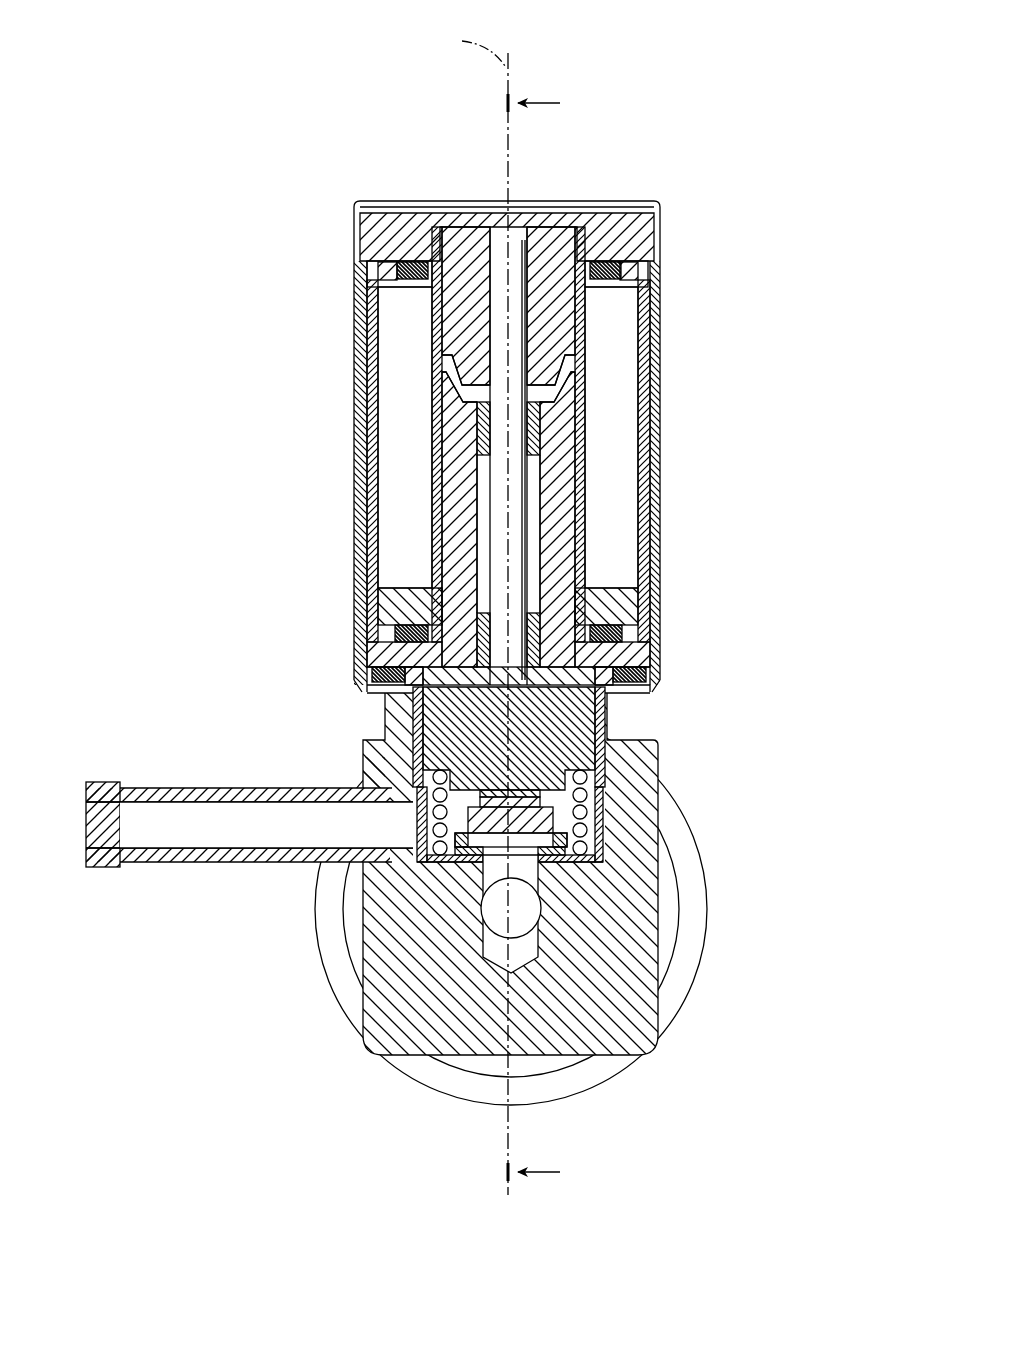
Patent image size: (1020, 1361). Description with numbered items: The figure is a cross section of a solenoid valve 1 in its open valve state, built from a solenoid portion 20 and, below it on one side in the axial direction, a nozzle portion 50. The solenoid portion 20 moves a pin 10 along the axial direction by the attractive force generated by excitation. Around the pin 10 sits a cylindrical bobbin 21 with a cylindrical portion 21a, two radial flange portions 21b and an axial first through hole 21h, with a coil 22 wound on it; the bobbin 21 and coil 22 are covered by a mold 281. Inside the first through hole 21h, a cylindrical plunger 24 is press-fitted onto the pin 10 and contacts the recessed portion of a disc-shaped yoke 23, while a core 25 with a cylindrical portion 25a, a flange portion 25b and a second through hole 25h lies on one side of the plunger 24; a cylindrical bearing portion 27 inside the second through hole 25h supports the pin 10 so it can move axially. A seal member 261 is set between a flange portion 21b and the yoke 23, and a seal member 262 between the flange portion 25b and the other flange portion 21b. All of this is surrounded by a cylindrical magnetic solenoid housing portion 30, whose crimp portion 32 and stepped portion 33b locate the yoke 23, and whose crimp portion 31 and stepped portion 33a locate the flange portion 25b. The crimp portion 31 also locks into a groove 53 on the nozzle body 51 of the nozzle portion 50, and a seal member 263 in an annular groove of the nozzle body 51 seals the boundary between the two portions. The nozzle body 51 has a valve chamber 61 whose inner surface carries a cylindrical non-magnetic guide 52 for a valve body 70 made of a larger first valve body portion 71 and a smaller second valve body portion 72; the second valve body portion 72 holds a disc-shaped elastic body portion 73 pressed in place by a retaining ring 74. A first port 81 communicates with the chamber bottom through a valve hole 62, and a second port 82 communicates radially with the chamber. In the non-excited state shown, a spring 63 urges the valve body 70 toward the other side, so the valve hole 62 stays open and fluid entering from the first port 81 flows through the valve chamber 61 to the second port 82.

The solenoid valve 1 is at (116, 144).
The pin 10 is at (515, 230).
The solenoid portion 20 is at (192, 414).
The bobbin 21 is at (640, 562).
The cylindrical portion 21a is at (585, 495).
The flange portions 21b is at (632, 278).
The first through hole 21h is at (567, 402).
The coil 22 is at (398, 406).
The yoke 23 is at (630, 225).
The plunger 24 is at (551, 228).
The core 25 is at (270, 520).
The cylindrical portion 25a is at (432, 548).
The flange portion 25b is at (435, 608).
The second through hole 25h is at (495, 490).
The bearing portion 27 is at (560, 433).
The solenoid housing portion 30 is at (360, 356).
The crimp portion 31 is at (378, 690).
The crimp portion 32 is at (358, 207).
The stepped portion 33a is at (365, 657).
The stepped portion 33b is at (358, 250).
The nozzle portion 50 is at (196, 733).
The nozzle body 51 is at (627, 1047).
The guide 52 is at (385, 777).
The groove 53 is at (385, 744).
The valve chamber 61 is at (640, 832).
The valve hole 62 is at (498, 893).
The spring 63 is at (620, 868).
The valve body 70 is at (745, 700).
The first valve body portion 71 is at (640, 720).
The second valve body portion 72 is at (590, 773).
The elastic body portion 73 is at (555, 818).
The retaining ring 74 is at (495, 850).
The first port 81 is at (500, 915).
The second port 82 is at (172, 850).
The seal member 261 is at (612, 268).
The seal member 262 is at (602, 645).
The seal member 263 is at (600, 678).
The mold 281 is at (648, 305).